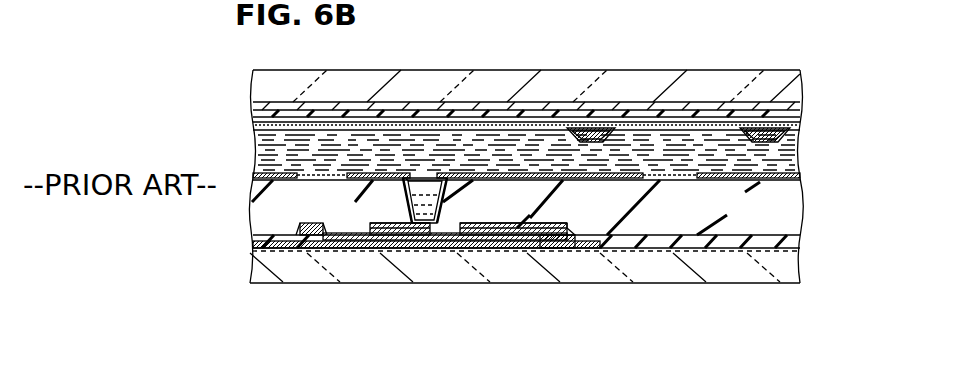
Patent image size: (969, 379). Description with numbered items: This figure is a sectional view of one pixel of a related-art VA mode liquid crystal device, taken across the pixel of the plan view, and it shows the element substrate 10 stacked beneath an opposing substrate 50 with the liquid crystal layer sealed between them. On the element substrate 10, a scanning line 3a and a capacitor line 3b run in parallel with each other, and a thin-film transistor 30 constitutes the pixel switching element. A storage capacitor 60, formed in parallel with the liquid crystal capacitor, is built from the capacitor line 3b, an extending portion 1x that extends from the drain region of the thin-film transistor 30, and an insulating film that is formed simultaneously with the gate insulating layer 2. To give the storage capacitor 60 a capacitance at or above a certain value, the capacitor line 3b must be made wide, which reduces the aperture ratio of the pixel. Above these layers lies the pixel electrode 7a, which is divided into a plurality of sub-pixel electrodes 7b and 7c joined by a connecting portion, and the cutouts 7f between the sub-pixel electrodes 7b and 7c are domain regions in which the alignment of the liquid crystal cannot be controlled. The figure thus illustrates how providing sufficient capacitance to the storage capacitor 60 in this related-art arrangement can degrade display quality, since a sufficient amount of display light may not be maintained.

The upper substrate (color filter substrate) 50 is at (808, 135).
The element substrate 10 is at (838, 283).
The cutouts 7f is at (668, 178).
The sub-pixel electrode 7c is at (762, 183).
The sub-pixel electrode 7b is at (640, 183).
The pixel electrode 7a is at (790, 207).
The scanning line 3a is at (350, 240).
The capacitor line 3b is at (518, 233).
The gate insulating layer 2 is at (342, 246).
The extending portion 1x is at (473, 261).
The thin-film transistor 30 is at (326, 260).
The storage capacitor 60 is at (552, 257).